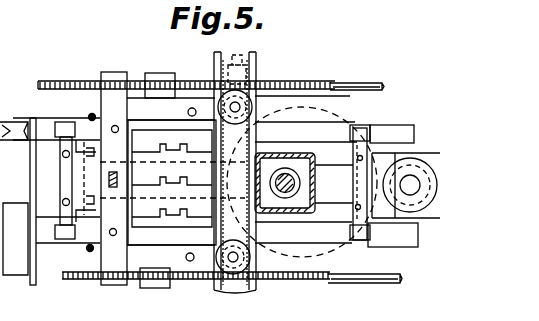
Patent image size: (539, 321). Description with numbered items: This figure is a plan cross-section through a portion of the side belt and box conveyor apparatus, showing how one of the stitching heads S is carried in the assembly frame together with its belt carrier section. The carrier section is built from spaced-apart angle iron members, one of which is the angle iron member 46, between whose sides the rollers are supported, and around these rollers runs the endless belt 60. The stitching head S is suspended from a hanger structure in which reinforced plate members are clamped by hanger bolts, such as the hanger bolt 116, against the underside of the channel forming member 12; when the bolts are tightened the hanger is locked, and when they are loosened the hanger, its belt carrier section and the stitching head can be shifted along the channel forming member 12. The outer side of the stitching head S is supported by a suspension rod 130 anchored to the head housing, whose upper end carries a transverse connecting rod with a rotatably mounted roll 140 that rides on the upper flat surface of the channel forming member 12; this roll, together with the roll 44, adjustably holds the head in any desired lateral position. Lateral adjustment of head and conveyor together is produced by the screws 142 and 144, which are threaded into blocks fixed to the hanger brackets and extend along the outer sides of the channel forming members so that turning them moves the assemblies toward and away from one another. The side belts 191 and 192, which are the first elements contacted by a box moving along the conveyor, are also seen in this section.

The channel forming member 12 is at (404, 126).
The roll 44 is at (65, 127).
The angle iron member 46 is at (116, 76).
The endless belt 60 is at (0, 75).
The hanger bolt 116 is at (91, 114).
The suspension rod 130 is at (348, 212).
The roll 140 is at (365, 128).
The screw 142 is at (232, 290).
The screw 144 is at (346, 83).
The side belt 191 is at (221, 55).
The side belt 192 is at (256, 289).
The stitching head S is at (303, 113).